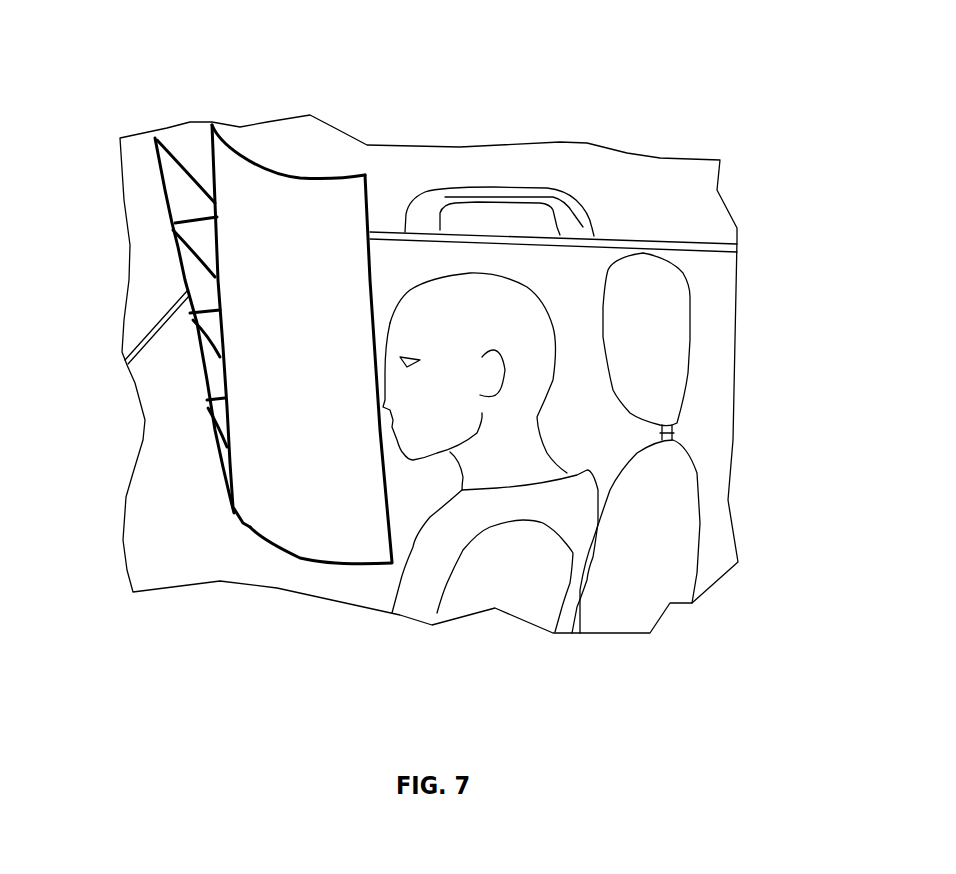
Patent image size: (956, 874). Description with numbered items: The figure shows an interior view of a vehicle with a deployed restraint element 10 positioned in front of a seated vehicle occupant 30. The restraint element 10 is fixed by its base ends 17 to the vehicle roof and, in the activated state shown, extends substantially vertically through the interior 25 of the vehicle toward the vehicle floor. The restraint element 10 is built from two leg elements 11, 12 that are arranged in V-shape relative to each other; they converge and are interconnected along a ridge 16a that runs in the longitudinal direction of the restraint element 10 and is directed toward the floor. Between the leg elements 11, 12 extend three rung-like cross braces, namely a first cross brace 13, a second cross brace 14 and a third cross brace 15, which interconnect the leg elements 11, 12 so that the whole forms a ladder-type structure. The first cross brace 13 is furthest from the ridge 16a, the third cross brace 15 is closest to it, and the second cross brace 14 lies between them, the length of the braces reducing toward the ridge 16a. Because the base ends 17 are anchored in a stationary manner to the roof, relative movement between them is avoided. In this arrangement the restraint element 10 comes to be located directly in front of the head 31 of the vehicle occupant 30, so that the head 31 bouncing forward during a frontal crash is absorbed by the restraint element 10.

The restraint element 10 is at (323, 167).
The leg element 11 is at (280, 477).
The leg element 12 is at (185, 202).
The first cross brace 13 is at (207, 248).
The second cross brace 14 is at (213, 339).
The third cross brace 15 is at (212, 407).
The ridge 16a is at (287, 557).
The base end 17 is at (168, 140).
The interior 25 is at (618, 197).
The vehicle occupant 30 is at (556, 436).
The head 31 is at (531, 343).